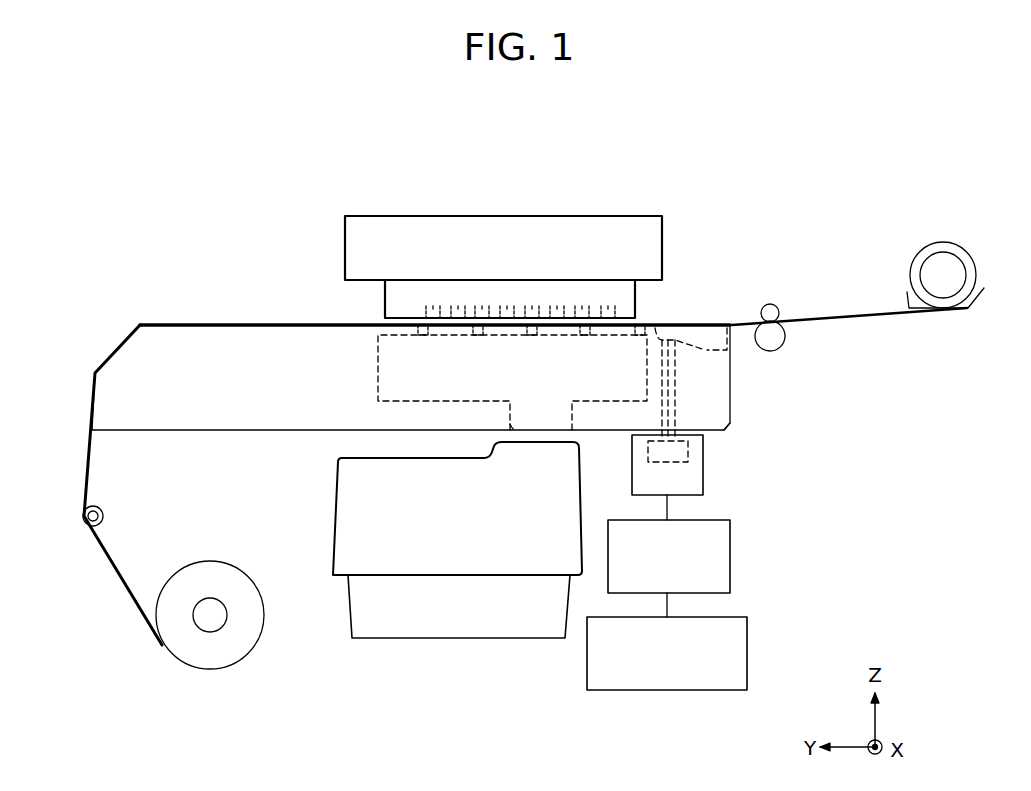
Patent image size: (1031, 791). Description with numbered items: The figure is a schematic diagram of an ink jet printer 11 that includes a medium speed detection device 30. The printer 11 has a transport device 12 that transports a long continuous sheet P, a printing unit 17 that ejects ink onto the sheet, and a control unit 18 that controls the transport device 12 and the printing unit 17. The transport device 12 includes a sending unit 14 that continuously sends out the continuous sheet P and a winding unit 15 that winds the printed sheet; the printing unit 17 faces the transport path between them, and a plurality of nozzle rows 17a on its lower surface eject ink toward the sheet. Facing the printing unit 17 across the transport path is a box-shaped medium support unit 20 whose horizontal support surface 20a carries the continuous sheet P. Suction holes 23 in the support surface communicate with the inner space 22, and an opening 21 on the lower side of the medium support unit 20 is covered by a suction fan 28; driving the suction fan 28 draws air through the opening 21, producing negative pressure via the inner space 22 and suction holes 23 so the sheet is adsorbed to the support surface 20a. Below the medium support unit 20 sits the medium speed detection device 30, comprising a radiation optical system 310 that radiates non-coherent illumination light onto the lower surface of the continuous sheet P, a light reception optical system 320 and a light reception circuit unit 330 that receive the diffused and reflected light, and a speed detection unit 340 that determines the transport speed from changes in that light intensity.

The ink jet printer 11 is at (127, 172).
The transport device 12 is at (123, 308).
The sending unit 14 is at (970, 238).
The winding unit 15 is at (160, 673).
The printing unit 17 is at (387, 208).
The nozzle rows 17a is at (433, 305).
The control unit 18 is at (747, 647).
The medium support unit 20 is at (226, 432).
The support surface 20a is at (260, 323).
The opening 21 is at (513, 432).
The inner space 22 is at (383, 372).
The suction holes 23 is at (423, 335).
The suction fan 28 is at (333, 517).
The medium speed detection device 30 is at (797, 513).
The radiation optical system 310 is at (707, 352).
The light reception optical system 320 is at (712, 435).
The light reception circuit unit 330 is at (703, 467).
The speed detection unit 340 is at (730, 553).
The continuous sheet P is at (85, 452).